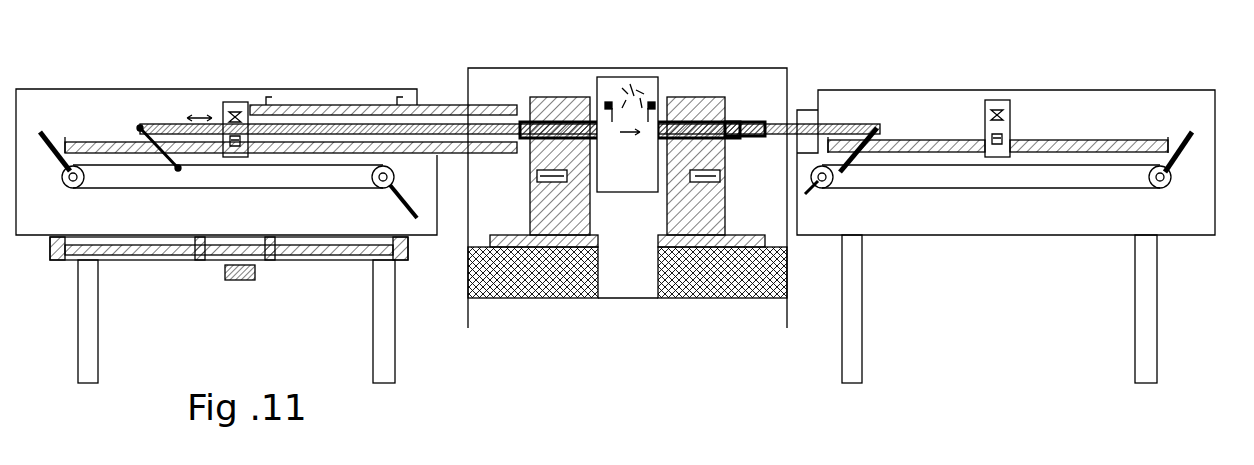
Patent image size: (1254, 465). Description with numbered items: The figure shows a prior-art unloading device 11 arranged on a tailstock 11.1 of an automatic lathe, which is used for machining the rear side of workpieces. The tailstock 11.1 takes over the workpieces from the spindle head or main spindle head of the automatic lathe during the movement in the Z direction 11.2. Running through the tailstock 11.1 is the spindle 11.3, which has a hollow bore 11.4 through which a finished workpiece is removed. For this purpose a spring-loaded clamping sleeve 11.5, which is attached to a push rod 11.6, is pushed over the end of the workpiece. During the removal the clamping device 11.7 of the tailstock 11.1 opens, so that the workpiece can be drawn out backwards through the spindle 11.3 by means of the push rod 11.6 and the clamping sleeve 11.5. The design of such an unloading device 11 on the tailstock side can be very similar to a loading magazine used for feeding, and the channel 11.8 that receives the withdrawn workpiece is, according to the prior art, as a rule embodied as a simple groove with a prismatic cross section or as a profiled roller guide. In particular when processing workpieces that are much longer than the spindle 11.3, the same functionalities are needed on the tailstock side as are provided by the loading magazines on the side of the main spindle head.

The tensioning device 11 is at (1006, 162).
The tailstock 11.1 is at (678, 97).
The Z direction 11.2 is at (728, 298).
The spindle 11.3 is at (707, 100).
The hollow bore 11.4 is at (733, 122).
The spring-loaded clamping sleeve 11.5 is at (740, 130).
The push rod 11.6 is at (837, 130).
The clamping device 11.7 is at (657, 110).
The channel 11.8 is at (892, 153).